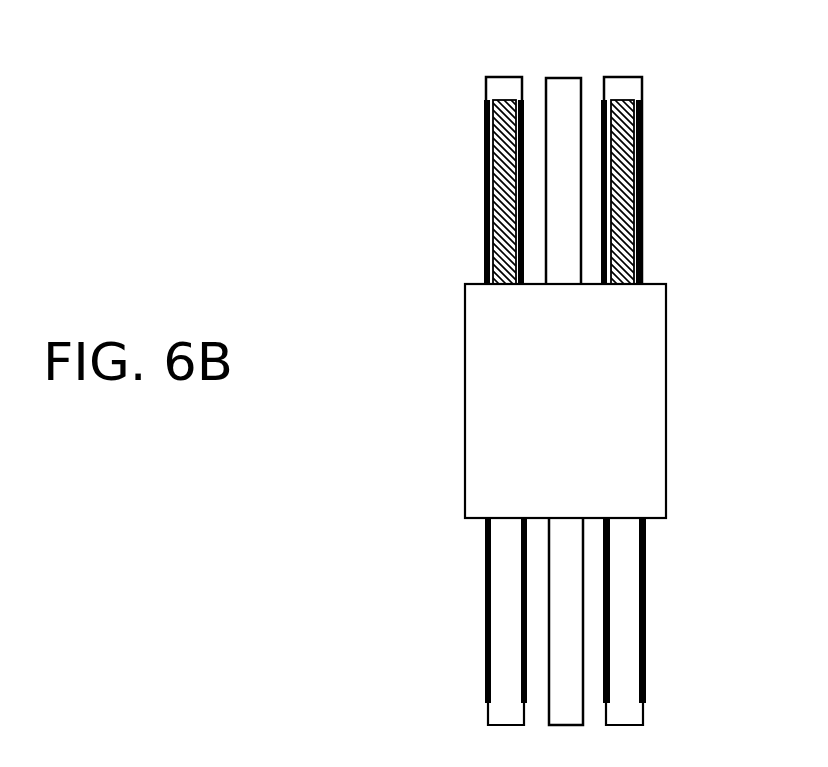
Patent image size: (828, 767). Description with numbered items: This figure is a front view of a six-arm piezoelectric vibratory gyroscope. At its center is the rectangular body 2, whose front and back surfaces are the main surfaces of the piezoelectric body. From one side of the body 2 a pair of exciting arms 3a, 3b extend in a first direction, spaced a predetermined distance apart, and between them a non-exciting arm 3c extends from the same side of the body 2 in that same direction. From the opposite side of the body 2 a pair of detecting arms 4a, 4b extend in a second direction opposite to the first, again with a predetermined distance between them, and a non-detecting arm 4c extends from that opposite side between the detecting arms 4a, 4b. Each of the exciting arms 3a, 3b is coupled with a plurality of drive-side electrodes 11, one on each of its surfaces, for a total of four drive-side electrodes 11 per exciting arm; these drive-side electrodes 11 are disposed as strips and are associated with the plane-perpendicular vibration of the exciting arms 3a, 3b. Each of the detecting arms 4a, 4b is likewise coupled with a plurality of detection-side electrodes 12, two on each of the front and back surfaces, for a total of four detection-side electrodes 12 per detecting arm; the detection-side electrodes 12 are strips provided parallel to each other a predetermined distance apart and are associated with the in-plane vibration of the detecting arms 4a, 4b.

The body 2 is at (647, 403).
The exciting arm 3a is at (503, 85).
The exciting arm 3b is at (622, 85).
The non-exciting arm 3c is at (563, 85).
The detecting arm 4a is at (505, 725).
The detecting arm 4b is at (628, 725).
The non-detecting arm 4c is at (567, 725).
The drive-side electrode 11 is at (485, 128).
The detection-side electrode 12 is at (487, 548).